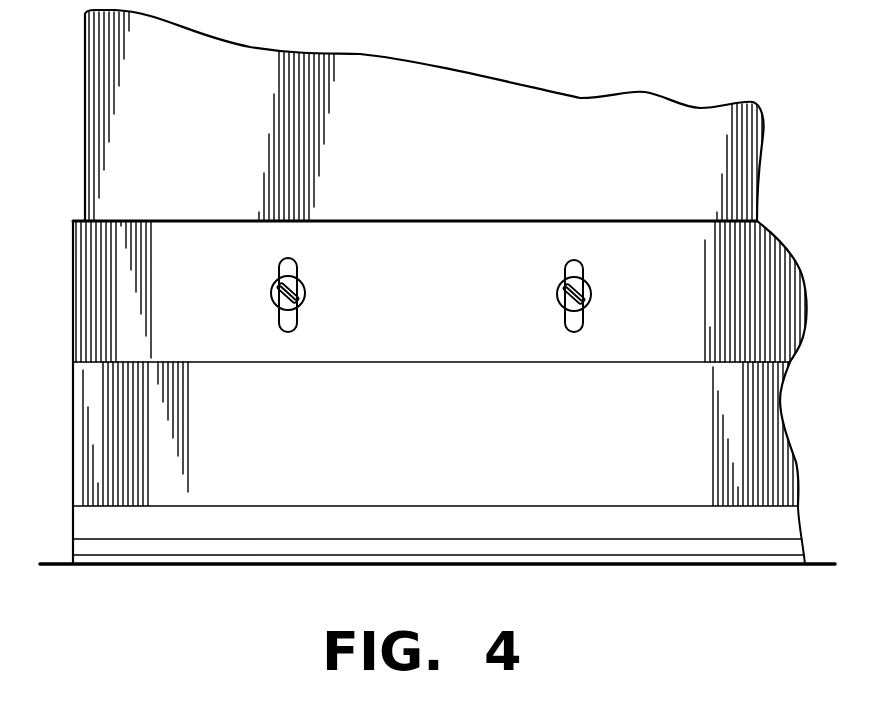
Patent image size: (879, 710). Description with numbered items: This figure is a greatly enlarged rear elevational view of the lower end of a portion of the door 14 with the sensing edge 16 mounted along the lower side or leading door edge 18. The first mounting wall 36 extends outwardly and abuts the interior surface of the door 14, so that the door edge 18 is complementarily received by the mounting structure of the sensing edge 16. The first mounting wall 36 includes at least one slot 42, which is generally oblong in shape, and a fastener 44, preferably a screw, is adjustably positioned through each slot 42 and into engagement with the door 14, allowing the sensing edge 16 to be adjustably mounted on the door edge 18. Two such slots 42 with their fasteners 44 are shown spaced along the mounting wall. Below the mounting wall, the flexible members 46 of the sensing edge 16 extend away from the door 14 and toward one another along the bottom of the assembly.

The door 14 is at (495, 100).
The first mounting wall 36 is at (82, 273).
The slot 42 is at (290, 267).
The fastener 44 is at (277, 292).
The flexible members 46 is at (85, 528).
The door edge 18 is at (247, 563).
The sensing edge 16 is at (480, 553).